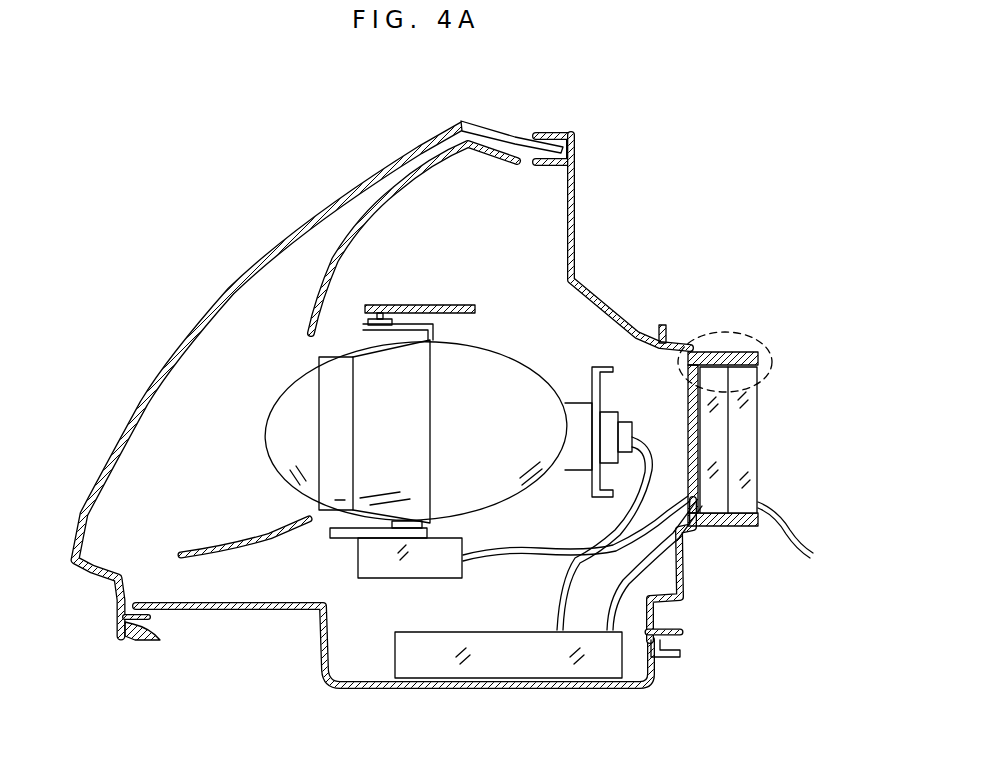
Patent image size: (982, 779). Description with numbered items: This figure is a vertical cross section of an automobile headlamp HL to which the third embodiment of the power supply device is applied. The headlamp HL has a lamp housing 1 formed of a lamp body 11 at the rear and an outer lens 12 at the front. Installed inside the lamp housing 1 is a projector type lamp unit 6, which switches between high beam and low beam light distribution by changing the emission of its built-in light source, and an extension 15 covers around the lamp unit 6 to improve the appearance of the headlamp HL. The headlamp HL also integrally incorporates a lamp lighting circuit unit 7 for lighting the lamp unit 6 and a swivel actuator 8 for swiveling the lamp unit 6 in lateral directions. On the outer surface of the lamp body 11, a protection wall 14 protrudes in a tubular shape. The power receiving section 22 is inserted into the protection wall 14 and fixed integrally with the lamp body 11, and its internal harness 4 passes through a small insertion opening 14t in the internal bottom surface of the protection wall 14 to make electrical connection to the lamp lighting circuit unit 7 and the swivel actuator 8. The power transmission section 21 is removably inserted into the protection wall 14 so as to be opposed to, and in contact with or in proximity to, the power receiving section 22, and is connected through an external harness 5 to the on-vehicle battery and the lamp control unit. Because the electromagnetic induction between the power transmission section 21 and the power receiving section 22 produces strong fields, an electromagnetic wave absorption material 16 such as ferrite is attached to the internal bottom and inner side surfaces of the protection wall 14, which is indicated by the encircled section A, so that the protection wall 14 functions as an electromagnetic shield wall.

The lamp housing 1 is at (593, 143).
The lamp body 11 is at (577, 248).
The outer lens 12 is at (300, 232).
The extension 15 is at (312, 300).
The lamp unit 6 is at (505, 354).
The electromagnetic wave absorption material 16 is at (710, 355).
The insertion opening 14t is at (690, 492).
The protection wall 14 is at (723, 527).
The power transmission section 21 is at (750, 428).
The power receiving section 22 is at (748, 457).
The external harness 5 is at (793, 530).
The internal harness 4 is at (533, 545).
The swivel actuator 8 is at (428, 572).
The lamp lighting circuit unit 7 is at (513, 660).
The headlamp HL is at (512, 128).
The section A is at (768, 345).